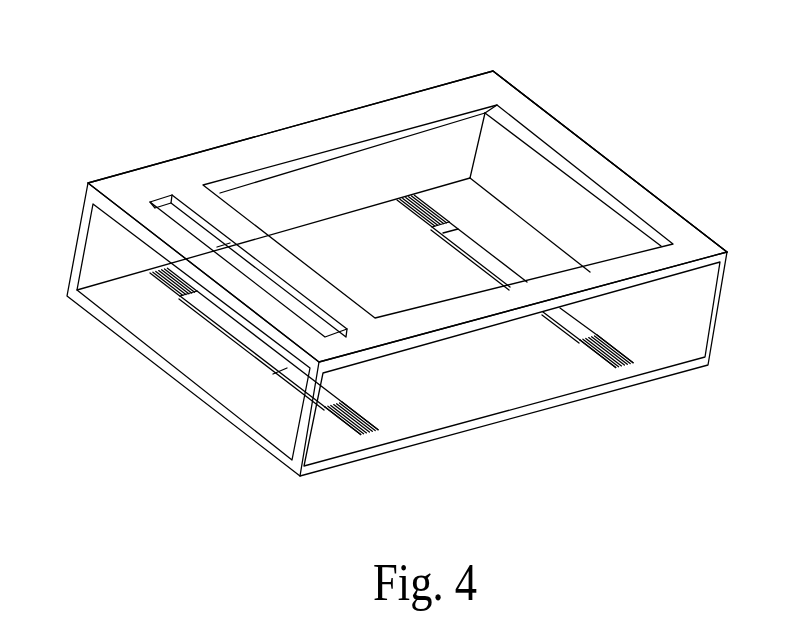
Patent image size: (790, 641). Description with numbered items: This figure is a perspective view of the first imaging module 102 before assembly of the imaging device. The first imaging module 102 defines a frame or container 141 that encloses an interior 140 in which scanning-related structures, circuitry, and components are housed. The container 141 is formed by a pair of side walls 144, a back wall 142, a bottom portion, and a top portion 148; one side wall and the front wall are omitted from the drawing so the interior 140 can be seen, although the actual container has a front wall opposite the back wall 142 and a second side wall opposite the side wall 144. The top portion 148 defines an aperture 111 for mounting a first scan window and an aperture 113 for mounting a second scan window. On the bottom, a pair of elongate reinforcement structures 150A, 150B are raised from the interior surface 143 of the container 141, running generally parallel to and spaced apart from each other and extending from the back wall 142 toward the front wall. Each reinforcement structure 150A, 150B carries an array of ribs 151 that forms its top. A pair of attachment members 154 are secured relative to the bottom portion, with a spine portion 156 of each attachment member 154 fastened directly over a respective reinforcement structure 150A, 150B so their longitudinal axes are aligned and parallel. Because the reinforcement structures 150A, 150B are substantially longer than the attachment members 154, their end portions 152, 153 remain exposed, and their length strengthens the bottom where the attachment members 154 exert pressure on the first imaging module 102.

The first imaging module 102 is at (259, 131).
The aperture 111 is at (431, 122).
The aperture 113 is at (159, 198).
The interior 140 is at (546, 178).
The container 141 is at (659, 190).
The back wall 142 is at (315, 205).
The interior surface 143 is at (495, 377).
The side wall 144 is at (590, 221).
The top portion 148 is at (347, 123).
The reinforcement structure 150A is at (334, 440).
The reinforcement structure 150B is at (589, 378).
The array of ribs 151 is at (398, 420).
The end portion 152 is at (373, 428).
The end portion 153 is at (448, 196).
The attachment member 154 is at (450, 257).
The spine portion 156 is at (456, 236).